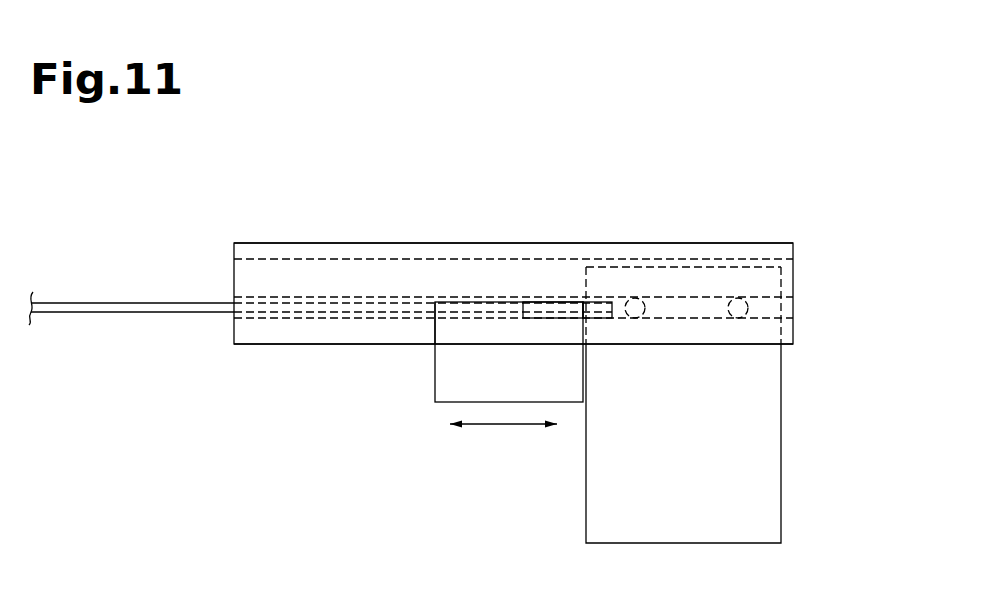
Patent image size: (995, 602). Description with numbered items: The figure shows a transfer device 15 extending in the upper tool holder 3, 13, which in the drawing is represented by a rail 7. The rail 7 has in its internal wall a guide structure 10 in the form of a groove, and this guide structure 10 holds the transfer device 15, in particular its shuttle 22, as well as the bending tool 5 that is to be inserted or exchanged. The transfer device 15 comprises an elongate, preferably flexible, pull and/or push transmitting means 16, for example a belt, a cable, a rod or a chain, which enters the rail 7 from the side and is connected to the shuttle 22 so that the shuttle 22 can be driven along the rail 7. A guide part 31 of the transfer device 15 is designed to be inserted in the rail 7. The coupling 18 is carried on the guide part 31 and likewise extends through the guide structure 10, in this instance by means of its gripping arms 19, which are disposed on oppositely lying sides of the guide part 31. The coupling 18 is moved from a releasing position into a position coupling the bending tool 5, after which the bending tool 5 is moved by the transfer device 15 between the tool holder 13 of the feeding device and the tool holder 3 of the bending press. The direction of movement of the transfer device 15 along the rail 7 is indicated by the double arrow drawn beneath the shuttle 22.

The upper tool holder 3 is at (513, 222).
The upper tool holder 13 is at (665, 243).
The rail 7 is at (420, 243).
The guide structure 10 is at (297, 296).
The pull and/or push transmitting means 16 is at (133, 313).
The bending tool transfer device 15 is at (302, 388).
The shuttle 22 is at (492, 380).
The guide part 31 is at (426, 334).
The bending tool 5 is at (688, 456).
The coupling 18 is at (540, 288).
The gripping arms 19 is at (600, 300).